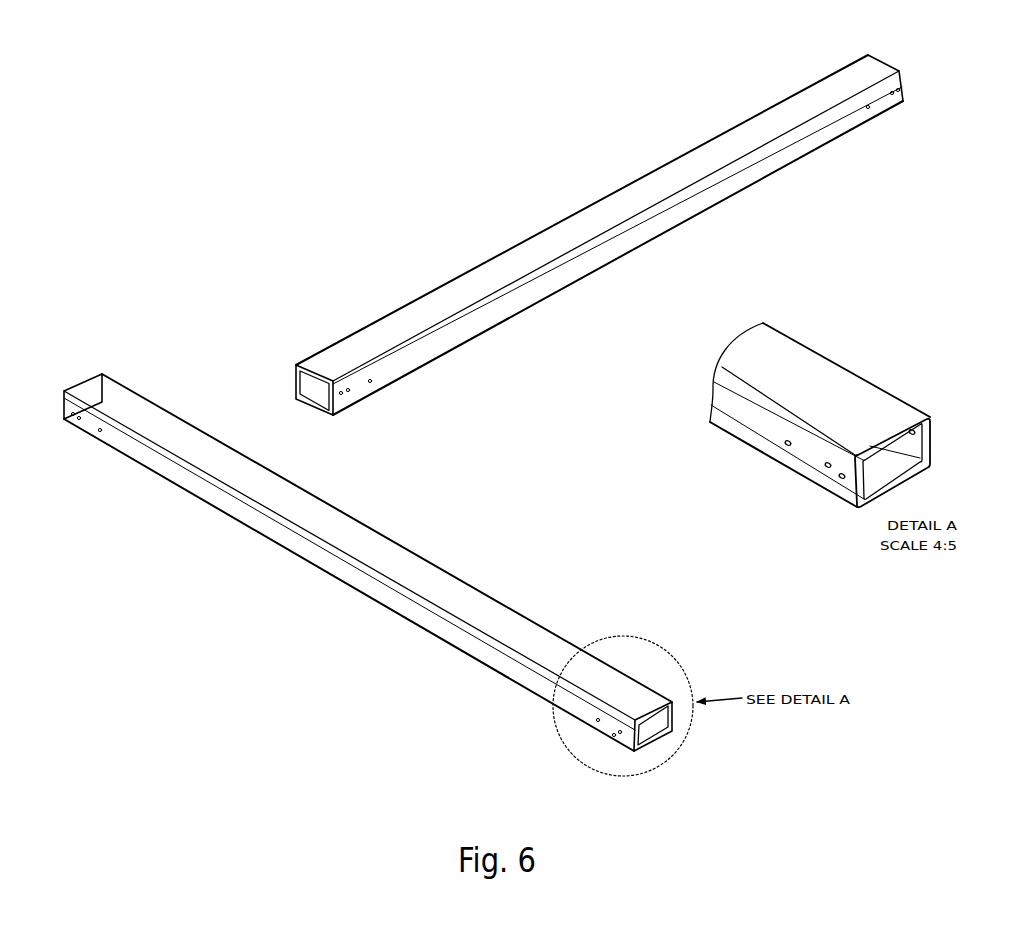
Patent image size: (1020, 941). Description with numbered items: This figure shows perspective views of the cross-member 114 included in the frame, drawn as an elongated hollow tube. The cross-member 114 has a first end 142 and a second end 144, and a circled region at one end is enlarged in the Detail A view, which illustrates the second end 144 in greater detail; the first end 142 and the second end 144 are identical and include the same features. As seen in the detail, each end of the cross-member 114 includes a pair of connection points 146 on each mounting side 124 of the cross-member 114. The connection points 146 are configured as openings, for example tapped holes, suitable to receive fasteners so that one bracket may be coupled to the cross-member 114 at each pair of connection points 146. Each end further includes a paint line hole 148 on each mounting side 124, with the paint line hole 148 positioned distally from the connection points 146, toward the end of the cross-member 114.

The cross-member 114 is at (395, 216).
The mounting side 124 is at (669, 229).
The first end 142 is at (316, 364).
The second end 144 is at (862, 78).
The connection points 146 is at (826, 467).
The paint line hole 148 is at (841, 479).